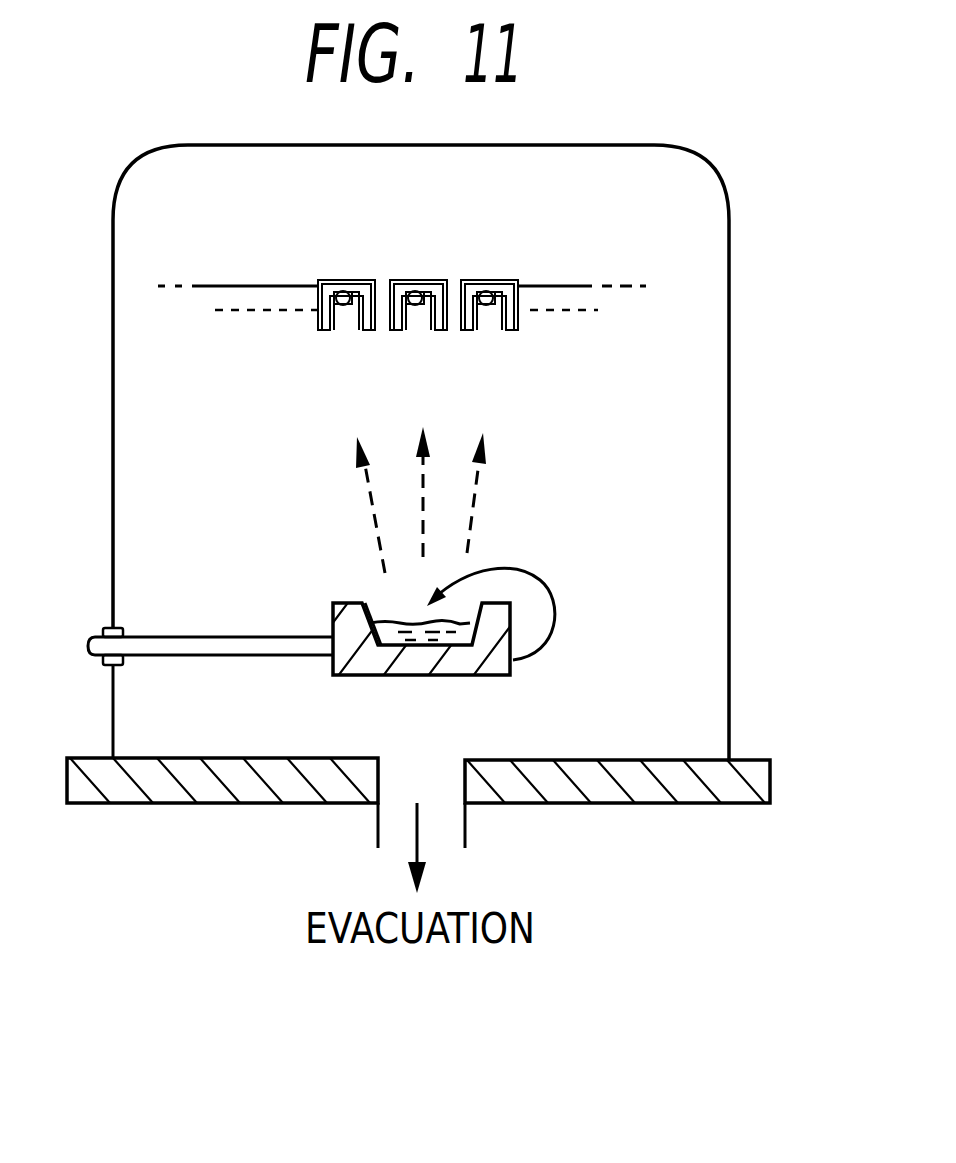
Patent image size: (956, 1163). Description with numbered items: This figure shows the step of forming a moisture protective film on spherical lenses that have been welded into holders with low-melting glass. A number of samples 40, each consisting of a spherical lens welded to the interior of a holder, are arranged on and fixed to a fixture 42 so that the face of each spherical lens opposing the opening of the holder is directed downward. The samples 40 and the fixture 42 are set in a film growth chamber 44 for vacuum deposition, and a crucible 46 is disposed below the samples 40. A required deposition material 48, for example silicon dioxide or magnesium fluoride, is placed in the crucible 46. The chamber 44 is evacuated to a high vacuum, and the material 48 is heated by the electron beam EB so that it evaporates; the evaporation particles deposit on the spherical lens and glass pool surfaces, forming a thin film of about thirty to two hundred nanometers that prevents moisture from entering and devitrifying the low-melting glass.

The samples 40 is at (318, 326).
The fixture 42 is at (220, 284).
The film growth chamber 44 is at (672, 470).
The crucible 46 is at (347, 648).
The deposition material 48 is at (400, 632).
The electron beam EB is at (509, 607).